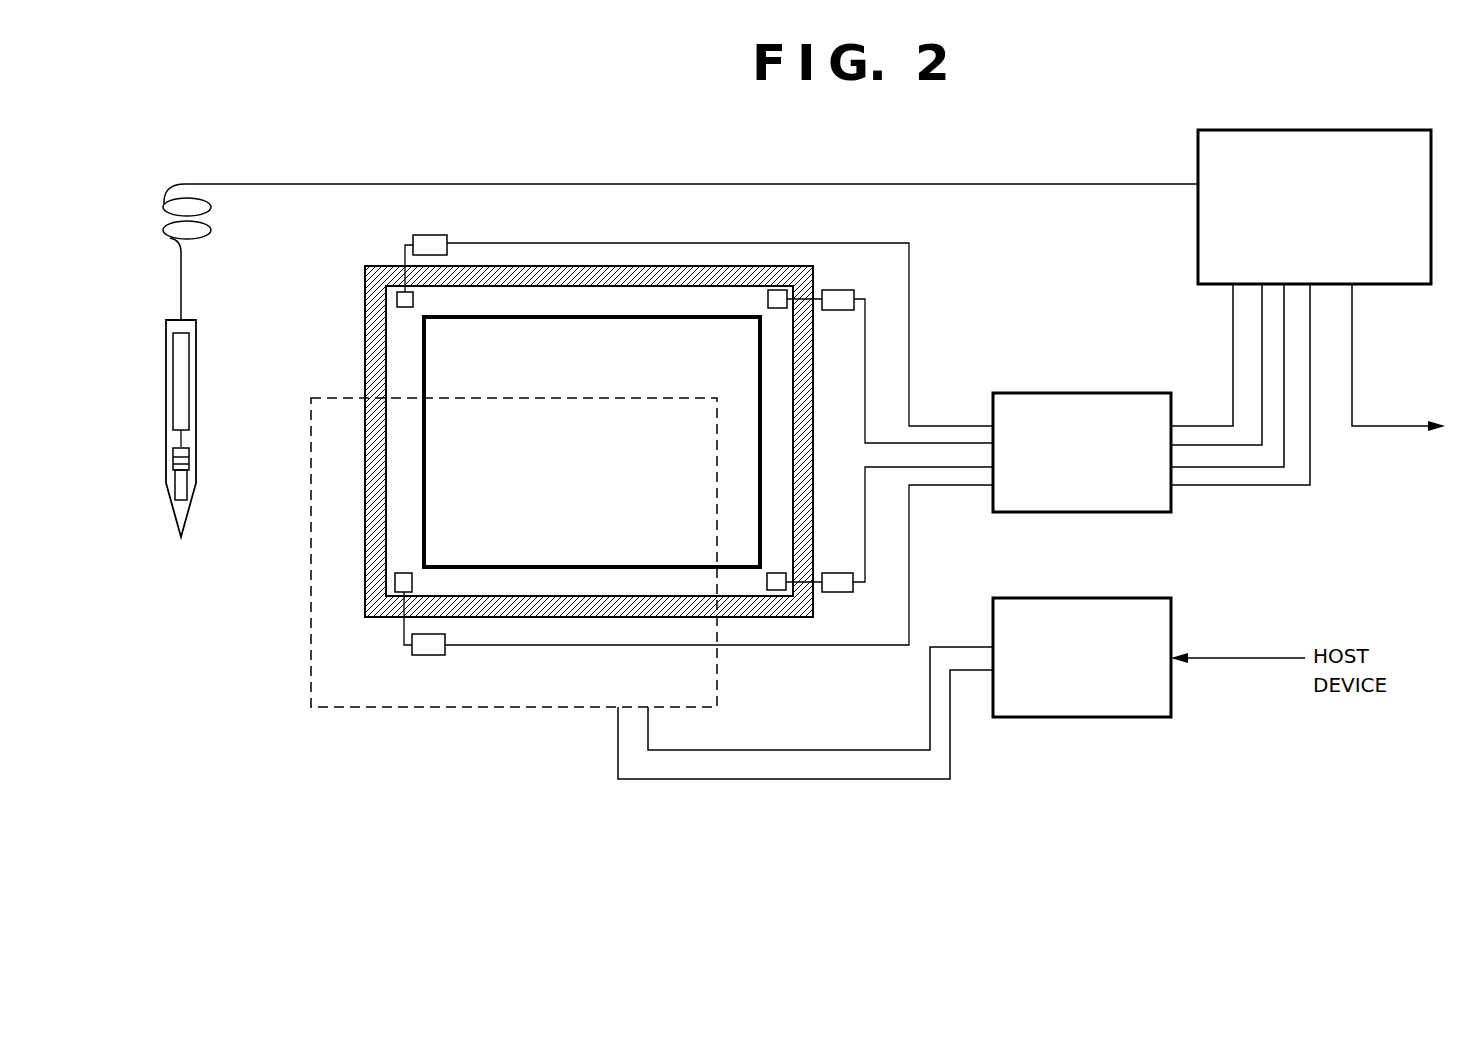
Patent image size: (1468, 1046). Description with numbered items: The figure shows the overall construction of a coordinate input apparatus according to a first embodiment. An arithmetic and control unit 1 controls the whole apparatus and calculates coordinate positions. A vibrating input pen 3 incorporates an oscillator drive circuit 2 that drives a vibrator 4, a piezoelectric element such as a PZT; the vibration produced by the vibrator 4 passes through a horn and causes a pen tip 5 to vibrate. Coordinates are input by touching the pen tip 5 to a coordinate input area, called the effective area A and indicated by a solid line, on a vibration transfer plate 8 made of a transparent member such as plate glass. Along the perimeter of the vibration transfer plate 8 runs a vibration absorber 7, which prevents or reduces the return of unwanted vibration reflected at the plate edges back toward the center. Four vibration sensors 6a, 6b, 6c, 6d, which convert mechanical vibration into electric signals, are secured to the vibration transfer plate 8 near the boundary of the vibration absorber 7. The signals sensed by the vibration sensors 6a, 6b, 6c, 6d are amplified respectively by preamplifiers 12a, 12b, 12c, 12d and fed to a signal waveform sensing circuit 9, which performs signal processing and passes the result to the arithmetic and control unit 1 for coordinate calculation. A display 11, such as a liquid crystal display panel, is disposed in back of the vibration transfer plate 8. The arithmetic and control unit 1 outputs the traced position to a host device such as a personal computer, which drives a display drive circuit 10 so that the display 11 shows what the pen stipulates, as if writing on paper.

The arithmetic and control unit 1 is at (1320, 130).
The oscillator drive circuit 2 is at (196, 372).
The vibrating input pen 3 is at (196, 322).
The vibrator 4 is at (189, 452).
The pen tip 5 is at (190, 494).
The vibration sensor 6a is at (405, 307).
The vibration sensor 6b is at (768, 300).
The vibration sensor 6c is at (410, 573).
The vibration sensor 6d is at (767, 580).
The vibration absorber 7 is at (592, 265).
The vibration transfer plate 8 is at (490, 295).
The signal waveform sensing circuit 9 is at (1087, 393).
The display drive circuit 10 is at (1087, 598).
The display 11 is at (528, 707).
The preamplifier 12a is at (413, 237).
The preamplifier 12b is at (835, 290).
The preamplifier 12c is at (415, 657).
The preamplifier 12d is at (838, 592).
The effective area A is at (457, 568).